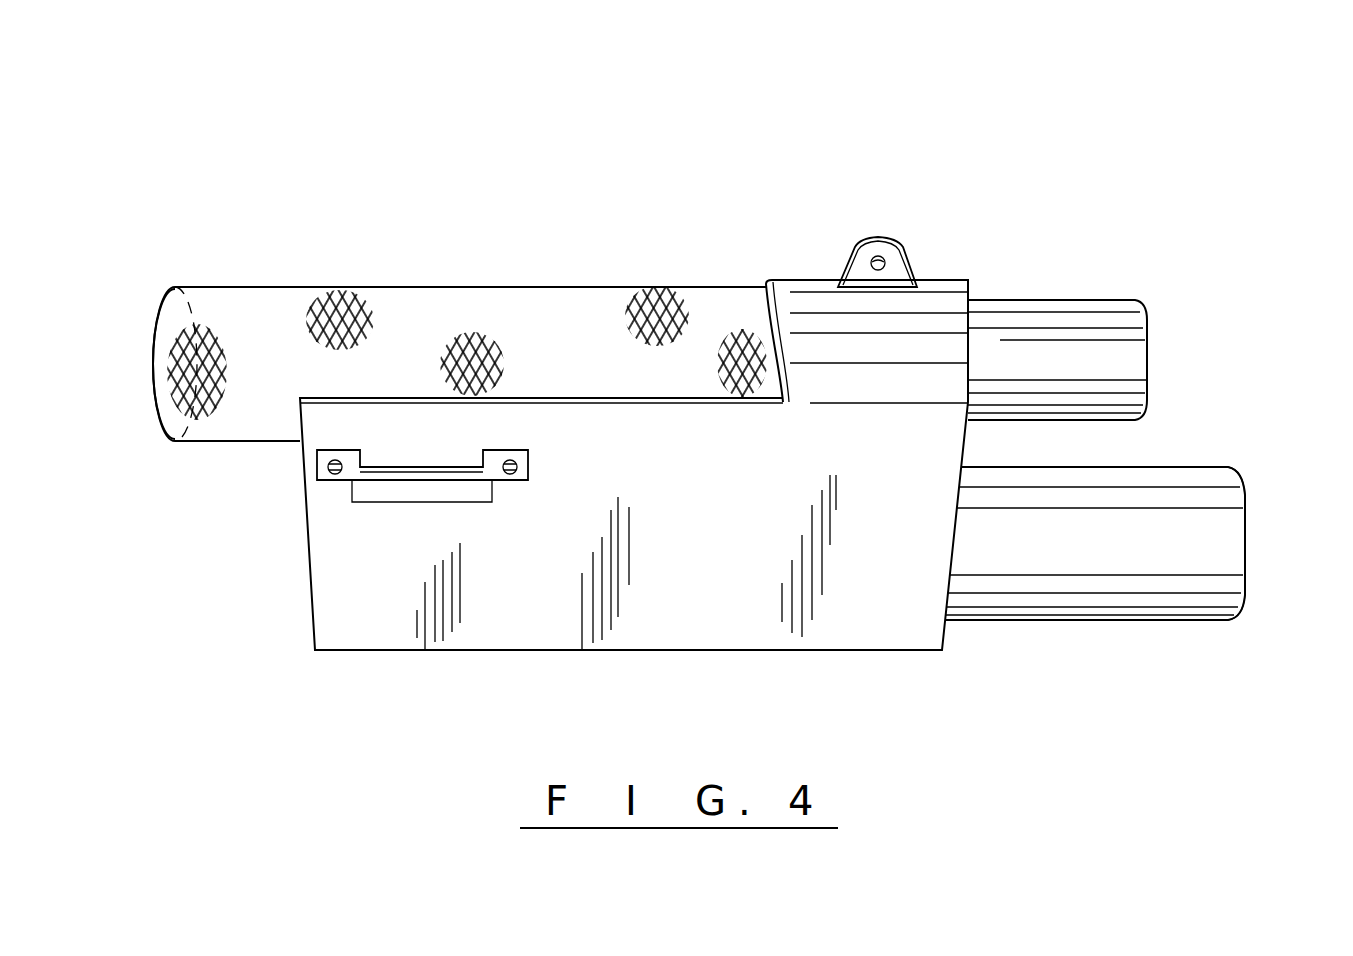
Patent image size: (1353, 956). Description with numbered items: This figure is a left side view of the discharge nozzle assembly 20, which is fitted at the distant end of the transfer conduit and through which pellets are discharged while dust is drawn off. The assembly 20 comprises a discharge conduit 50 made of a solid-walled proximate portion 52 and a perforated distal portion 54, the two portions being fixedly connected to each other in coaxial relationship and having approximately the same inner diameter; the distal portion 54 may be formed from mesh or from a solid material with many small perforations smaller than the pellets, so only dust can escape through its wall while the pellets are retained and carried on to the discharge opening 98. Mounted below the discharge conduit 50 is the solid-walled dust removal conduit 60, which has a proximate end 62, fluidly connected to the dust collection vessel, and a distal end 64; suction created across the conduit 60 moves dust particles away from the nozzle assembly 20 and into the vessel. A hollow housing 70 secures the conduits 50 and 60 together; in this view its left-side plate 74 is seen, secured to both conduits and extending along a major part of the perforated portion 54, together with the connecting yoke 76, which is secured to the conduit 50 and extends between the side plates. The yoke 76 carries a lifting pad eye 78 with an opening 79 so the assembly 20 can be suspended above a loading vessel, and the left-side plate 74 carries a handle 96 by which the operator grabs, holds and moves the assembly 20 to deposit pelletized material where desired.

The discharge nozzle assembly 20 is at (783, 117).
The discharge conduit 50 is at (308, 288).
The proximate portion of discharge conduit 52 is at (1100, 298).
The distal portion of discharge conduit 54 is at (531, 318).
The dust removal conduit 60 is at (1182, 467).
The proximate end of dust removal conduit 62 is at (1247, 540).
The distal end of dust removal conduit 64 is at (951, 622).
The hollow housing 70 is at (845, 651).
The left-side plate 74 is at (657, 552).
The connecting yoke 76 is at (933, 297).
The lifting pad eye 78 is at (903, 253).
The opening 79 is at (872, 262).
The handle 96 is at (430, 502).
The discharge opening 98 is at (155, 383).